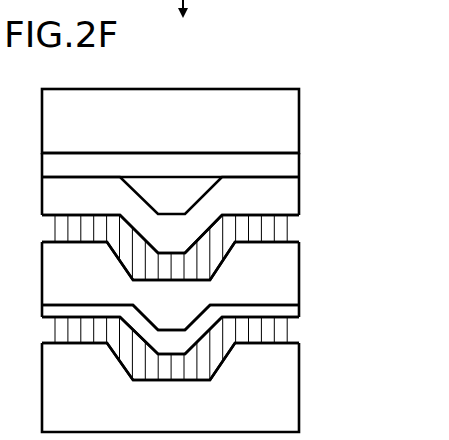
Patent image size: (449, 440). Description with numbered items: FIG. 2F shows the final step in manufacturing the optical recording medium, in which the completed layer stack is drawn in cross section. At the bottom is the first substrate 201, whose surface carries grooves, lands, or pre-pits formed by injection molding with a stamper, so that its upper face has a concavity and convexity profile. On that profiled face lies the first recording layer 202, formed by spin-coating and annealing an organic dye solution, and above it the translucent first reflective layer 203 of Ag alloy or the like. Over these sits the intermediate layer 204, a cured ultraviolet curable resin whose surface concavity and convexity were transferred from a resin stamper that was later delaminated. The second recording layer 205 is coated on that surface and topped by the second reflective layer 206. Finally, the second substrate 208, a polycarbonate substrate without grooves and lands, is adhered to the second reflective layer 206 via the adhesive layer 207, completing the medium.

The first substrate 201 is at (288, 403).
The first recording layer 202 is at (288, 336).
The first reflective layer 203 is at (288, 305).
The intermediate layer 204 is at (288, 272).
The second recording layer 205 is at (288, 227).
The second reflective layer 206 is at (288, 197).
The adhesive layer 207 is at (295, 160).
The second substrate 208 is at (203, 102).